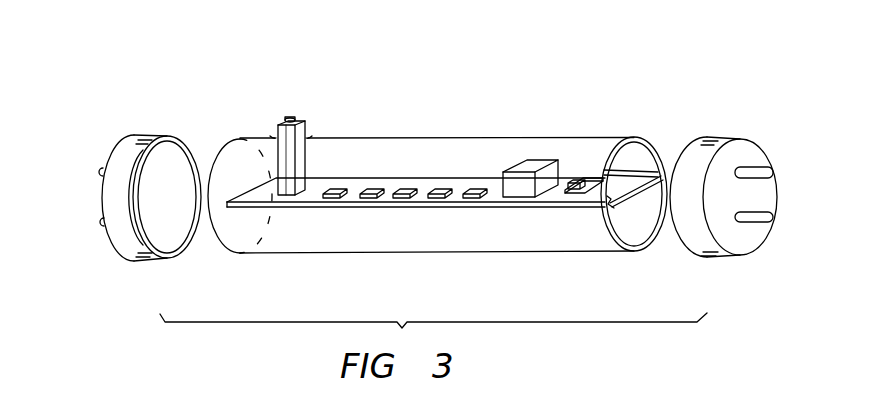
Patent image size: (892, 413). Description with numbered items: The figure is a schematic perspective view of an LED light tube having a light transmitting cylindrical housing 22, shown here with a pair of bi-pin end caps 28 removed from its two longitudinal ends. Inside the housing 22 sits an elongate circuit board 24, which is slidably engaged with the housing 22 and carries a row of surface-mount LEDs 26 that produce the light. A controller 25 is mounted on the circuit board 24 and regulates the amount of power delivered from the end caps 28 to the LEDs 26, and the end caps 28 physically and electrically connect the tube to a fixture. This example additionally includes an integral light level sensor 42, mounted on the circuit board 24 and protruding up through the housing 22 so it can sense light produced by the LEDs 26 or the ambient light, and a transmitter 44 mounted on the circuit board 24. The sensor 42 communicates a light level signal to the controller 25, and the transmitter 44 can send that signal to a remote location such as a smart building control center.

The housing 22 is at (367, 138).
The circuit board 24 is at (423, 178).
The controller 25 is at (522, 190).
The LEDs 26 is at (443, 186).
The end caps 28 is at (153, 257).
The light level sensor 42 is at (277, 127).
The transmitter 44 is at (578, 193).